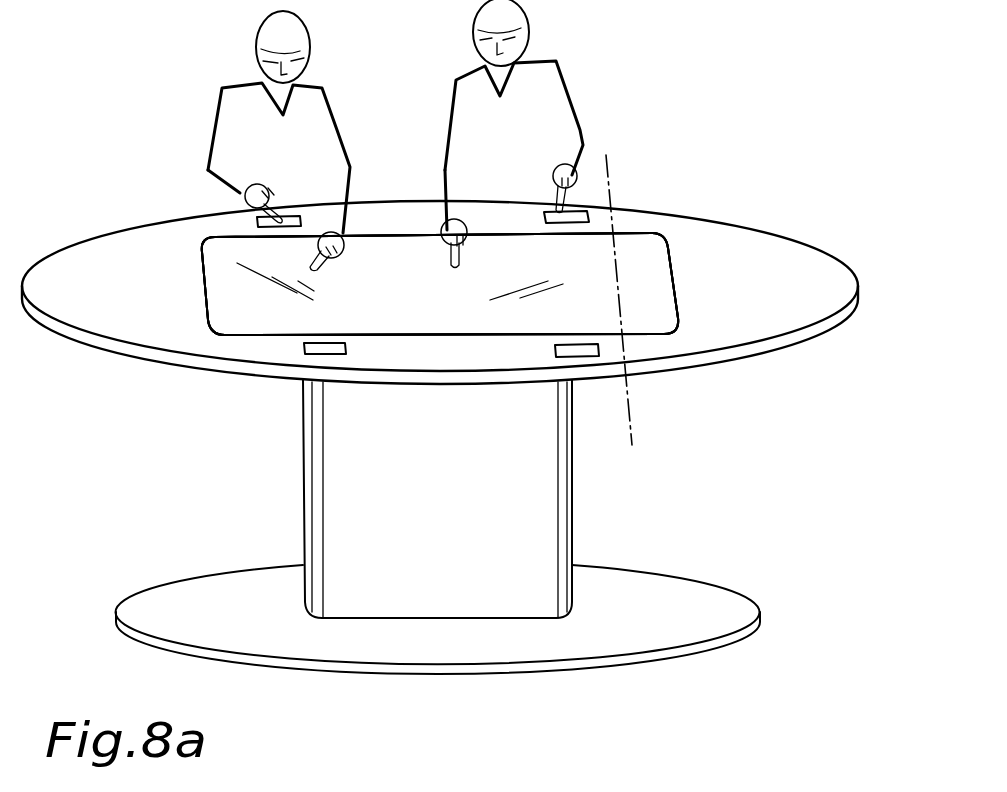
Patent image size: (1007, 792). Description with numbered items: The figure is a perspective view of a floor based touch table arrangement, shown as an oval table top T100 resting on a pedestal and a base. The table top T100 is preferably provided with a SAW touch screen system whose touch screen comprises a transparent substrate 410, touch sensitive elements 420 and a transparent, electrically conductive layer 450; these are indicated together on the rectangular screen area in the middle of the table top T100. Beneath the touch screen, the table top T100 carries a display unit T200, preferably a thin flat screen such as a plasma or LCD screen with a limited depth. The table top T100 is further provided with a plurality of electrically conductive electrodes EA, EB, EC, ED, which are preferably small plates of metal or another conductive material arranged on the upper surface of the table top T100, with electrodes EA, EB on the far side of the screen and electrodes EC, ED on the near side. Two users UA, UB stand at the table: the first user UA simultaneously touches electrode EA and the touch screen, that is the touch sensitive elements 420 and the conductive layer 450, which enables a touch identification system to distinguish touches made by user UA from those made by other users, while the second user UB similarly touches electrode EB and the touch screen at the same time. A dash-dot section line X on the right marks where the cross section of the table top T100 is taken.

The table top T100 is at (778, 258).
The display unit T200 is at (440, 306).
The transparent substrate 410 is at (440, 284).
The touch sensitive elements 420 is at (440, 284).
The transparent and electrically conductive layer 450 is at (440, 284).
The electrode EA is at (290, 214).
The electrode EB is at (553, 216).
The electrode EC is at (300, 344).
The electrode ED is at (580, 348).
The first user UA is at (268, 33).
The second user UB is at (505, 14).
The section line X is at (622, 175).